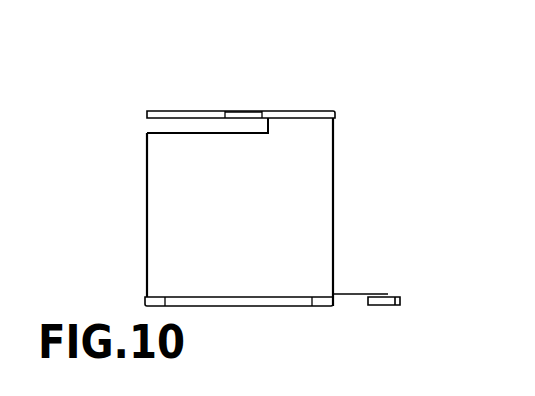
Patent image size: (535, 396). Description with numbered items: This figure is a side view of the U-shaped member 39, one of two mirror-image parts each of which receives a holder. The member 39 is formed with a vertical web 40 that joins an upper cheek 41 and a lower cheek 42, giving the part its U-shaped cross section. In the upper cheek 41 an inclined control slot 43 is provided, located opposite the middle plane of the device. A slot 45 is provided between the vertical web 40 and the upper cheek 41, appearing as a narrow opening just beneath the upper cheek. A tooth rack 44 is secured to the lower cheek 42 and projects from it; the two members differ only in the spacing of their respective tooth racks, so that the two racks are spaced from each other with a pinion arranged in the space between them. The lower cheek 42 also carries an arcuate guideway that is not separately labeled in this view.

The U-shaped member 39 is at (198, 110).
The vertical web 40 is at (158, 233).
The upper cheek 41 is at (313, 111).
The lower cheek 42 is at (200, 306).
The inclined control slot 43 is at (247, 111).
The tooth rack 44 is at (378, 306).
The slot 45 is at (168, 127).